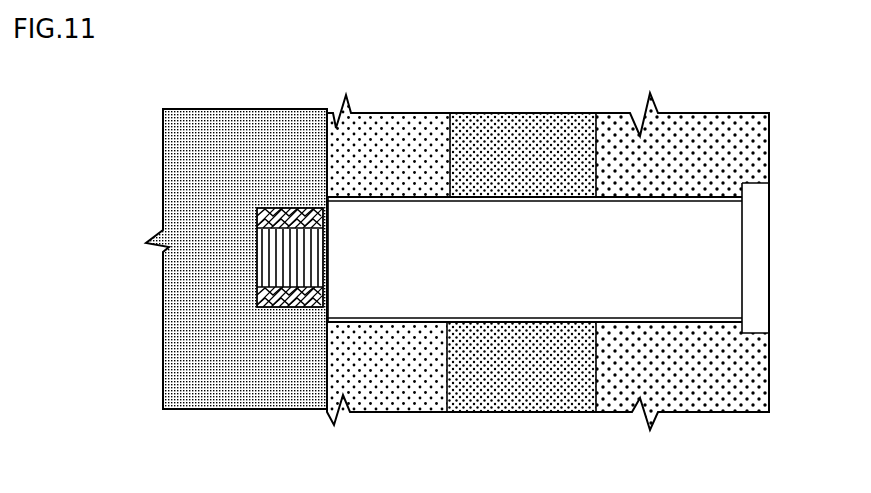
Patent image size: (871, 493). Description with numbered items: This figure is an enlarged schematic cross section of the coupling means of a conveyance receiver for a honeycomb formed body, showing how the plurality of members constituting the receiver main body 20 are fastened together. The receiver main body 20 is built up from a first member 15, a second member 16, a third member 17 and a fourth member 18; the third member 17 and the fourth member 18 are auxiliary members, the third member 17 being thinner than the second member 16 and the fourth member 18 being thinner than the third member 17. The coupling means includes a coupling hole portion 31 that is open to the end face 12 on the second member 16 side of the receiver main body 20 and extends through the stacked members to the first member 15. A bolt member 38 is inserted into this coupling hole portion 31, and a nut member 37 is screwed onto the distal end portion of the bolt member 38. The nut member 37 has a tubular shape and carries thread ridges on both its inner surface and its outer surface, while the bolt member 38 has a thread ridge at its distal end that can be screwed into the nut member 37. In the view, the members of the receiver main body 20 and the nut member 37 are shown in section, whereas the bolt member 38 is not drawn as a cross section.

The end face 12 is at (771, 151).
The first member 15 is at (174, 384).
The second member 16 is at (705, 403).
The third member 17 is at (413, 128).
The fourth member 18 is at (530, 128).
The receiver main body 20 is at (768, 378).
The coupling hole portion 31 is at (521, 322).
The nut member 37 is at (290, 308).
The bolt member 38 is at (395, 305).